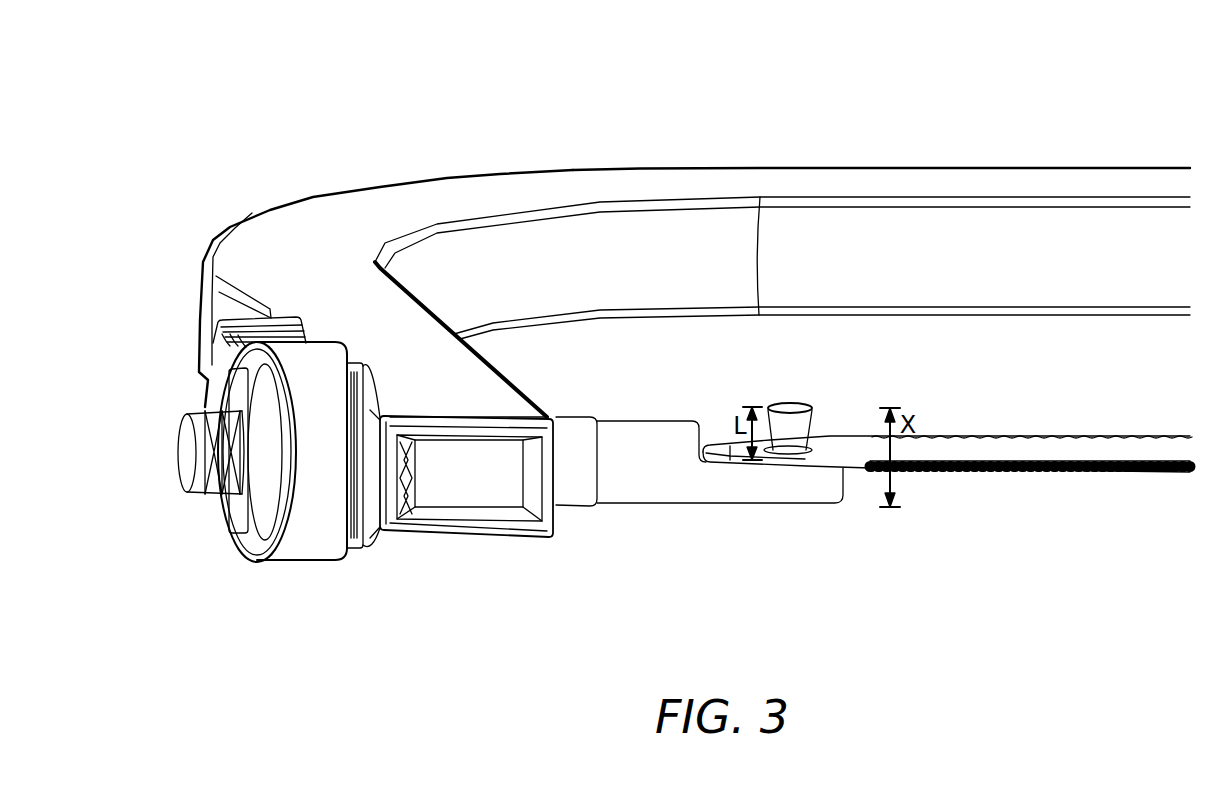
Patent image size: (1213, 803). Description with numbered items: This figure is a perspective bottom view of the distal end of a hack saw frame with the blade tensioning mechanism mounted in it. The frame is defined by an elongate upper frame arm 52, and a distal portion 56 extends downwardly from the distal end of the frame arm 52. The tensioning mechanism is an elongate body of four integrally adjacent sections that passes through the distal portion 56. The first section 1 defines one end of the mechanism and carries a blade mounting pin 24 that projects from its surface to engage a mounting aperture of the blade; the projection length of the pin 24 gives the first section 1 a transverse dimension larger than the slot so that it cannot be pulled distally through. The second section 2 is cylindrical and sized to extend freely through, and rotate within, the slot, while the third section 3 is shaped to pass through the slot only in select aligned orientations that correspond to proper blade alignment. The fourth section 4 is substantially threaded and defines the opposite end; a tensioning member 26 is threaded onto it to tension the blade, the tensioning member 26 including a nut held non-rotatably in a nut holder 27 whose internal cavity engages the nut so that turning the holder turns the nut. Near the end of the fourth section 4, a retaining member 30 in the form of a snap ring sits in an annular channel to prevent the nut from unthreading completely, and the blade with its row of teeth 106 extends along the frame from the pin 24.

The upper frame arm 52 is at (911, 168).
The distal portion 56 is at (506, 376).
The tensioning member 26 is at (285, 568).
The nut holder 27 is at (314, 563).
The retaining member 30 is at (224, 468).
The fourth section 4 is at (210, 455).
The third section 3 is at (490, 496).
The second section 2 is at (643, 489).
The first section 1 is at (822, 497).
The blade mounting pin 24 is at (802, 422).
The toothed rack 106 is at (978, 470).